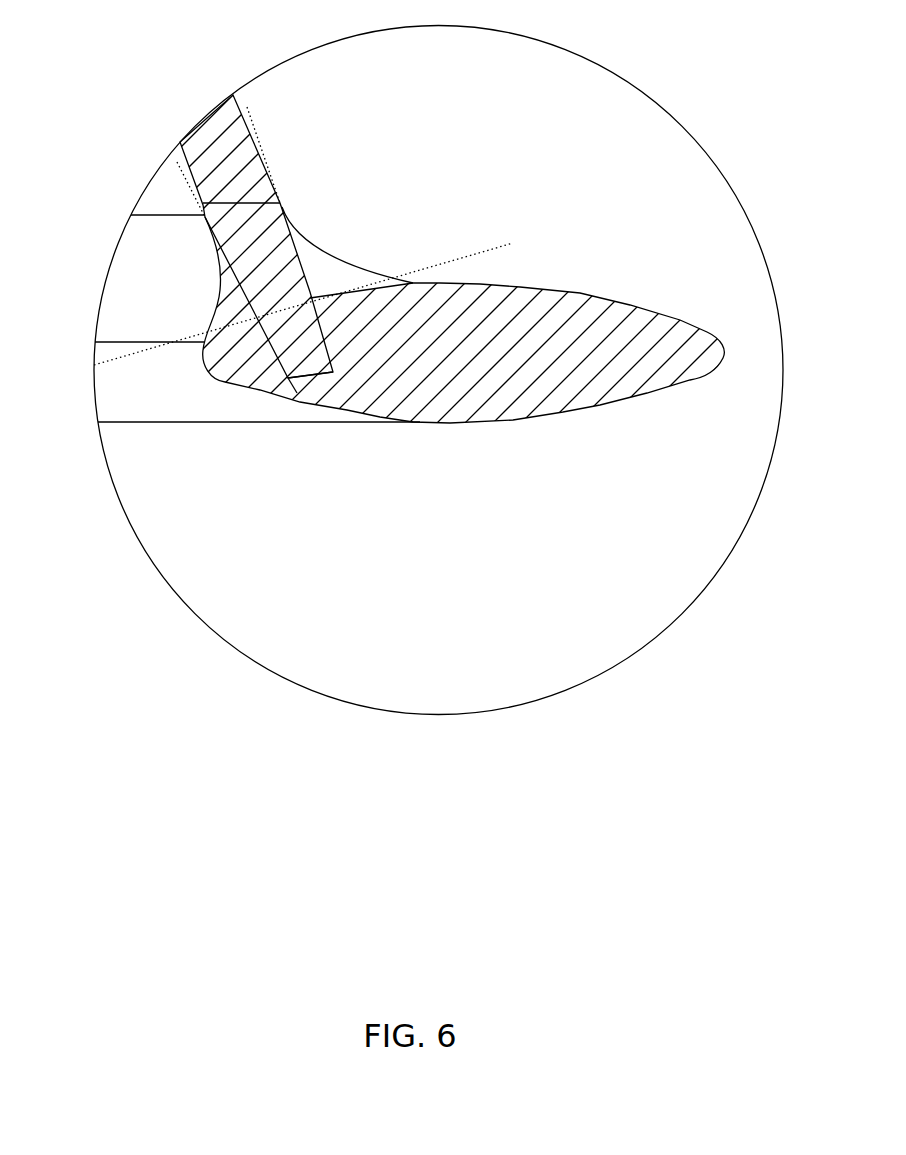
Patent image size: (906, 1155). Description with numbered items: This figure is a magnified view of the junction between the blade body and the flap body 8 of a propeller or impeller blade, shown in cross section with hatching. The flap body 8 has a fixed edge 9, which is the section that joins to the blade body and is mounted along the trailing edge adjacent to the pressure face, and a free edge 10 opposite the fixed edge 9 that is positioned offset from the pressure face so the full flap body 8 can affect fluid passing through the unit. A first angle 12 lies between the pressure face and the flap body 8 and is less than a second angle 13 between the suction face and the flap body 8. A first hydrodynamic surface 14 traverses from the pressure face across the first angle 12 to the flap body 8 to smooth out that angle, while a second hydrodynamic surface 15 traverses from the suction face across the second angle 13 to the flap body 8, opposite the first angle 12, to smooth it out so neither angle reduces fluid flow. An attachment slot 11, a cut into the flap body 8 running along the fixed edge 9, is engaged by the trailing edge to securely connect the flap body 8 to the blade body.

The flap body 8 is at (529, 402).
The fixed edge 9 is at (470, 226).
The free edge 10 is at (717, 298).
The attachment slot 11 is at (292, 372).
The first angle 12 is at (315, 273).
The second angle 13 is at (232, 300).
The first hydrodynamic surface 14 is at (298, 237).
The second hydrodynamic surface 15 is at (220, 262).